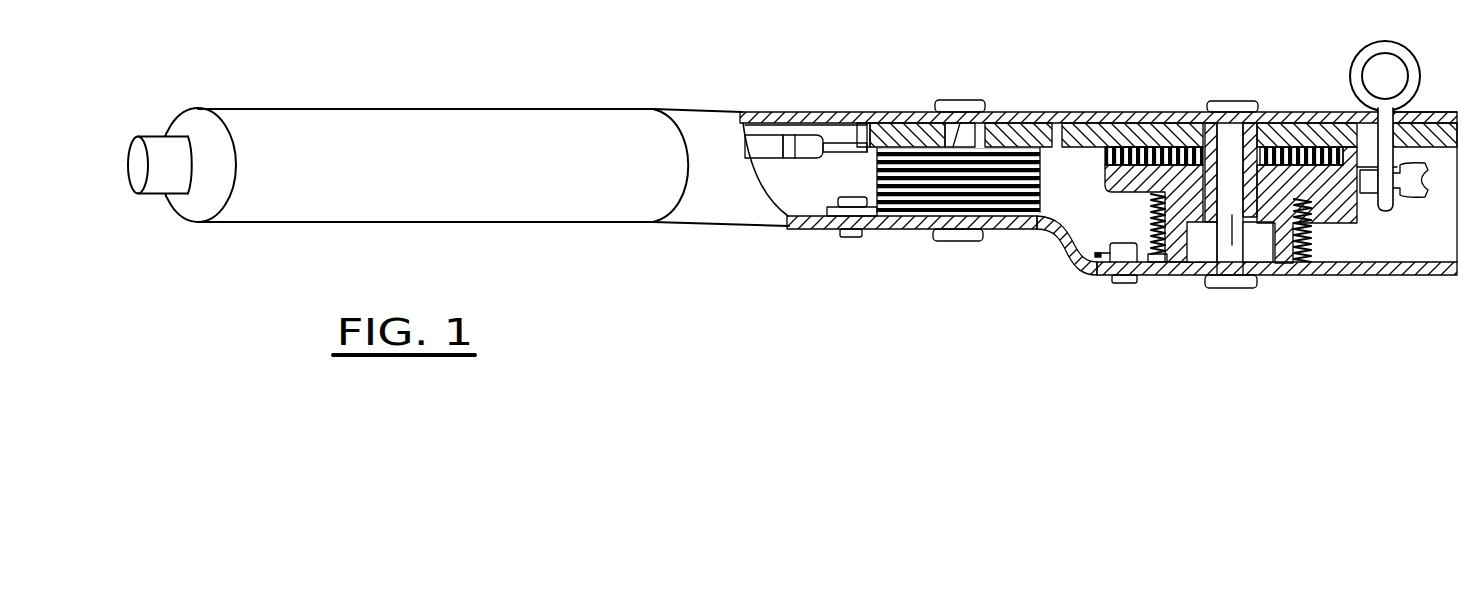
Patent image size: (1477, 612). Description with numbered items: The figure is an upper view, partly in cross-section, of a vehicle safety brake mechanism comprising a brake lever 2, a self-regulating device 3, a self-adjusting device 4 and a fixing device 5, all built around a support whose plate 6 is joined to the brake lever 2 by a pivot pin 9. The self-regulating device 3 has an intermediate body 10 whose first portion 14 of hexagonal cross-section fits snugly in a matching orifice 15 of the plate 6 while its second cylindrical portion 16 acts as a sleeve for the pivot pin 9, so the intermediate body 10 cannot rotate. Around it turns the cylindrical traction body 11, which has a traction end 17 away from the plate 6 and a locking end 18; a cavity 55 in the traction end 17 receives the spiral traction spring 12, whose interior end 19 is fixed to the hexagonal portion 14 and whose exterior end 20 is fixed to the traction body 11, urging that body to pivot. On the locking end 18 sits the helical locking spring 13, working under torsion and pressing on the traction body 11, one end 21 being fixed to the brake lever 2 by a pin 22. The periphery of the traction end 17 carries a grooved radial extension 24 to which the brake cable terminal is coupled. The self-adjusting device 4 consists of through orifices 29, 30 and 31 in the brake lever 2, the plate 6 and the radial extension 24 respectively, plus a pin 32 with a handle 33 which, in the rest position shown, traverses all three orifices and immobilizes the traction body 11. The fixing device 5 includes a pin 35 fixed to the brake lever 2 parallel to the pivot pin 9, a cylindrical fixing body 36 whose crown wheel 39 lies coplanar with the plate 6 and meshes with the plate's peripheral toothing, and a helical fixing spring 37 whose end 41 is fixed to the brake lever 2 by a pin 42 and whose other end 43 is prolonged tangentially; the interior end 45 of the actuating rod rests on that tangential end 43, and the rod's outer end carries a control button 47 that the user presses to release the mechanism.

The brake lever 2 is at (506, 96).
The control button 47 is at (155, 147).
The fixing device 5 is at (830, 174).
The plate 6 is at (1067, 112).
The end of the locking spring 21 is at (1075, 268).
The self-regulating device 3 is at (1320, 262).
The interior end 45 is at (760, 143).
The end of the fixing spring 43 is at (800, 145).
The fixing body 36 is at (880, 128).
The crown wheel 39 is at (908, 126).
The pin 35 is at (950, 102).
The helical fixing spring 37 is at (916, 190).
The end of the fixing spring 41 is at (830, 211).
The pin 42 is at (857, 238).
The traction end 17 is at (1097, 128).
The spiral traction spring 12 is at (1128, 130).
The exterior end 20 is at (1100, 160).
The traction body 11 is at (1150, 200).
The helical locking spring 13 is at (1157, 263).
The locking end 18 is at (1178, 263).
The interior end 19 is at (1177, 133).
The intermediate body 10 is at (1206, 134).
The first portion 14 is at (1225, 115).
The second cylindrical portion 16 is at (1225, 263).
The pivot pin 9 is at (1243, 263).
The orifice 15 is at (1273, 128).
The cavity 55 is at (1318, 145).
The through orifice 30 is at (1410, 112).
The through orifice 29 is at (1398, 120).
The through orifice 31 is at (1368, 198).
The grooved radial extension 24 is at (1412, 198).
The self-adjusting device 4 is at (1373, 132).
The handle 33 is at (1409, 52).
The pin 32 is at (1385, 212).
The pin 22 is at (1115, 283).